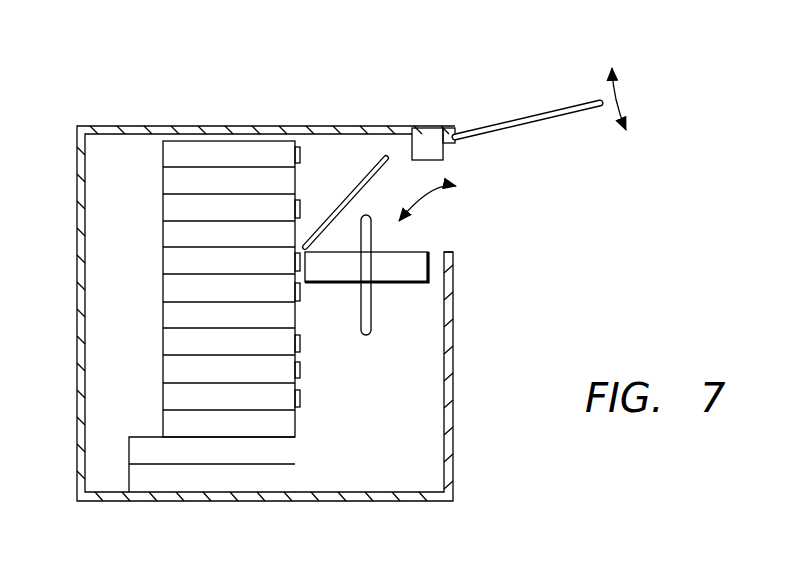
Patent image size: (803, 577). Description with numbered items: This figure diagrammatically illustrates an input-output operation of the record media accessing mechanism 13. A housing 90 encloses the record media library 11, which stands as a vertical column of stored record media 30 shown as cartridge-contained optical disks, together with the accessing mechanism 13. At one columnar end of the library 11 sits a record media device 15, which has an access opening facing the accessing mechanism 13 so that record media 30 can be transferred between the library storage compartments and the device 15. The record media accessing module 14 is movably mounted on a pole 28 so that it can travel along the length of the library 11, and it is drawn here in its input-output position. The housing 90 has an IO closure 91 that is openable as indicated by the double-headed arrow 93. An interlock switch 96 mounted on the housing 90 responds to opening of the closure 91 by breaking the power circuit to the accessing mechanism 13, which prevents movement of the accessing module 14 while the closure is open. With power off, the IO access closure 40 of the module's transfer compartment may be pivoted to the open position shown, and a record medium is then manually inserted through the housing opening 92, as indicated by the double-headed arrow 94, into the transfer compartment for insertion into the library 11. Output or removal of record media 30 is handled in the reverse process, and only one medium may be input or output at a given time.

The housing 90 is at (77, 288).
The opening 92 is at (478, 246).
The record media library 11 is at (146, 236).
The record media device 15 is at (182, 483).
The record media 30 is at (300, 154).
The IO access closure 40 is at (340, 208).
The record media accessing module 14 is at (347, 272).
The pole 28 is at (371, 308).
The record media accessing mechanism 13 is at (405, 362).
The interlock switch 96 is at (427, 143).
The IO closure 91 is at (568, 106).
The double-headed arrow 93 is at (621, 98).
The double-headed arrow 94 is at (437, 193).